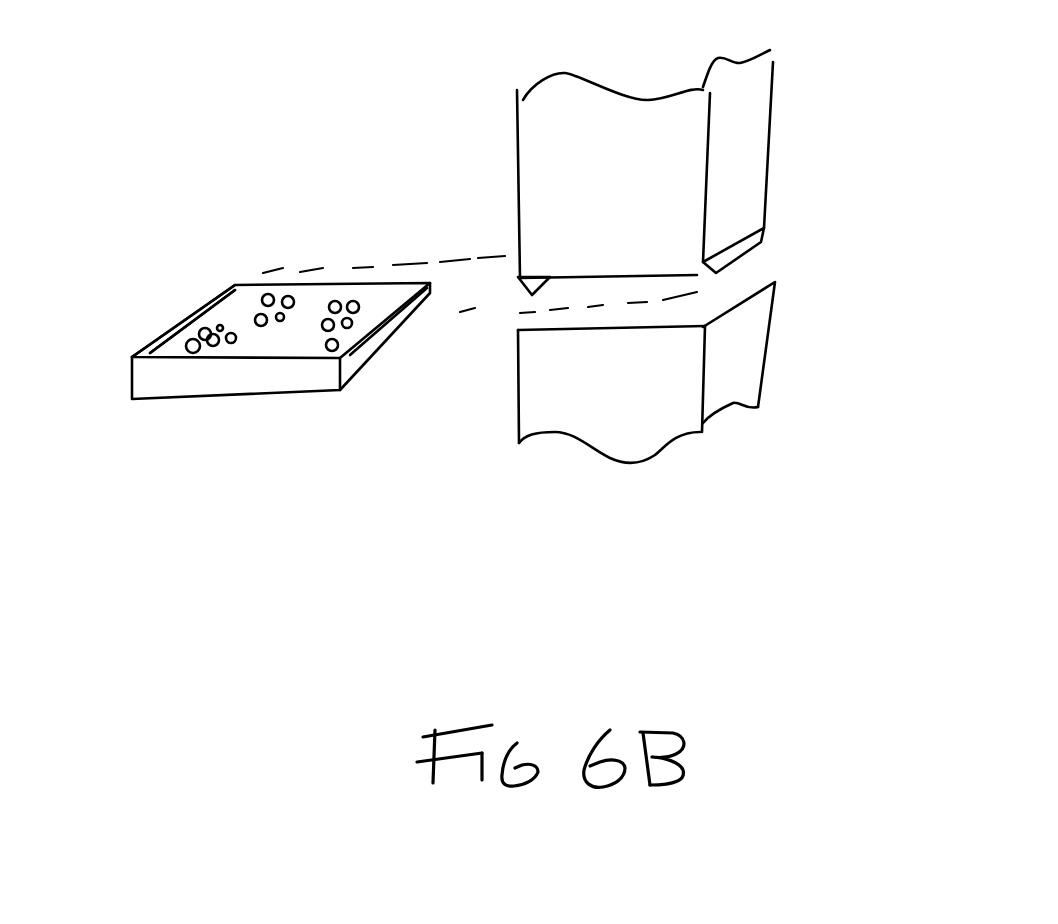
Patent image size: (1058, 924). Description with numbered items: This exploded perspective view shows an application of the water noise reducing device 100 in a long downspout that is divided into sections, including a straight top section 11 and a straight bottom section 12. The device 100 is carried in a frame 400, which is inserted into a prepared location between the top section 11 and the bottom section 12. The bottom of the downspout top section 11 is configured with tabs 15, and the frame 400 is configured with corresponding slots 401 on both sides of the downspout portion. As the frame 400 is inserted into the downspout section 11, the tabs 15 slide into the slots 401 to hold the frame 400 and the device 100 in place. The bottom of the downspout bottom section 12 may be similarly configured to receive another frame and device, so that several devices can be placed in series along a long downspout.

The straight top section 11 is at (760, 147).
The straight bottom section 12 is at (745, 356).
The tabs 15 is at (958, 190).
The water noise reducing device 100 is at (248, 308).
The frame 400 is at (173, 383).
The slots 401 is at (163, 332).